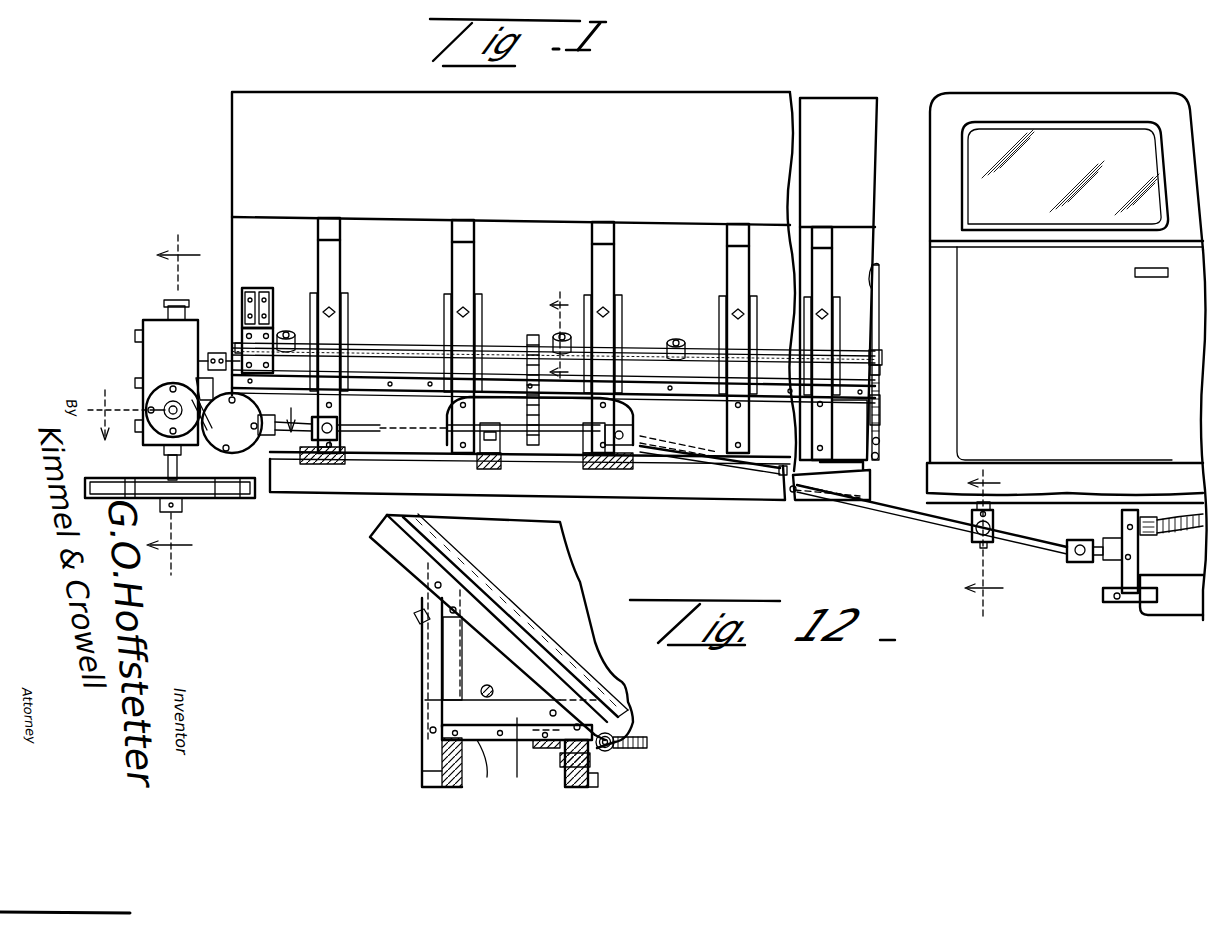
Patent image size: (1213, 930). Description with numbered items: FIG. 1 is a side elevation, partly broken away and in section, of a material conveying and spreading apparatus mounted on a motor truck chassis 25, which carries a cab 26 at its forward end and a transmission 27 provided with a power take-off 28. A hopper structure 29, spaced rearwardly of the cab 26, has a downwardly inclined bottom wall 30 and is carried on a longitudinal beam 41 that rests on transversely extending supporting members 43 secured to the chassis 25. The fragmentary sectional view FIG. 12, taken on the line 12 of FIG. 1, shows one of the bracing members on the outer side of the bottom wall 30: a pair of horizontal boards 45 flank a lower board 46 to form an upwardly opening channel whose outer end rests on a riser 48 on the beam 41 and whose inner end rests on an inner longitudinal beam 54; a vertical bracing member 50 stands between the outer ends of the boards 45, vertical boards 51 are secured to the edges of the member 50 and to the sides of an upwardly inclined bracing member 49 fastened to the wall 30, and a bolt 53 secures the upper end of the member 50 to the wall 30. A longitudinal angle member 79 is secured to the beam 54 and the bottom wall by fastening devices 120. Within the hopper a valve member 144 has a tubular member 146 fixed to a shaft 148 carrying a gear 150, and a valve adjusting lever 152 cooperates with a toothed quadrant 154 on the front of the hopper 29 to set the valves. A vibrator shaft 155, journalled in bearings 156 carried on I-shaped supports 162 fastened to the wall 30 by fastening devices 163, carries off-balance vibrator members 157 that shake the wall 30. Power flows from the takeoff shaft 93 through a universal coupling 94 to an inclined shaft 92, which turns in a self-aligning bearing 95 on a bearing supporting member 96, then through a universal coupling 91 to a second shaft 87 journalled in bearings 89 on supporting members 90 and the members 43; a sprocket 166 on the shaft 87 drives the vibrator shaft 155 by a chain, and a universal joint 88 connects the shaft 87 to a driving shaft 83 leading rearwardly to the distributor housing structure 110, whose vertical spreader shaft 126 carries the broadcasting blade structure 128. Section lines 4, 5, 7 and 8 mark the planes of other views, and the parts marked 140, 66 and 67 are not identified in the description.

In FIG. 1, the hopper structure 29 is at (243, 172).
In FIG. 1, the section line 12— 12 is at (838, 215).
In FIG. 1, the vertical boards 51 is at (594, 294).
In FIG. 12, the vertical boards 51 is at (448, 654).
In FIG. 1, the vibrator shaft 155 is at (384, 348).
In FIG. 12, the vibrator shaft 155 is at (492, 688).
In FIG. 1, the longitudinal beam 41 is at (553, 405).
In FIG. 12, the longitudinal beam 41 is at (424, 771).
In FIG. 1, the horizontal boards 45 is at (712, 377).
In FIG. 12, the horizontal boards 45 is at (552, 756).
In FIG. 1, the motor truck chassis 25 is at (743, 490).
In FIG. 1, the transversely extending supporting members 43 is at (325, 465).
In FIG. 1, the distributor housing structure 110 is at (162, 352).
In FIG. 1, the bearing block 140 is at (216, 351).
In FIG. 1, the fastening devices 163 is at (253, 288).
In FIG. 1, the I-shaped supports 162 is at (272, 322).
In FIG. 1, the bearings 156 is at (274, 358).
In FIG. 1, the vibrator members 157 is at (286, 331).
In FIG. 1, the section line 5 is at (173, 401).
In FIG. 1, the section line 4 is at (191, 405).
In FIG. 1, the section line 7 is at (565, 336).
In FIG. 1, the section line 8 is at (994, 545).
In FIG. 1, the driving shaft 83 is at (282, 432).
In FIG. 1, the universal joint 88 is at (324, 417).
In FIG. 1, the second shaft 87 is at (362, 436).
In FIG. 1, the spreader shaft 126 is at (165, 462).
In FIG. 1, the broadcasting blade structure 128 is at (230, 502).
In FIG. 1, the supporting members 90 is at (498, 470).
In FIG. 1, the bearings 89 is at (490, 428).
In FIG. 1, the sprocket 166 is at (540, 426).
In FIG. 1, the universal coupling 91 is at (632, 428).
In FIG. 1, the vertical bracing member 50 is at (730, 344).
In FIG. 12, the vertical bracing member 50 is at (440, 663).
In FIG. 1, the risers 48 is at (750, 393).
In FIG. 12, the risers 48 is at (445, 742).
In FIG. 1, the cab 26 is at (933, 370).
In FIG. 1, the transmission 27 is at (1180, 608).
In FIG. 1, the power take-off 28 is at (1113, 557).
In FIG. 1, the takeoff shaft 93 is at (1100, 543).
In FIG. 1, the universal coupling 94 is at (1074, 558).
In FIG. 1, the self-aligning bearing 95 is at (975, 540).
In FIG. 1, the bearing supporting member 96 is at (993, 513).
In FIG. 1, the inclined shaft 92 is at (873, 512).
In FIG. 1, the valve adjusting lever 152 is at (882, 332).
In FIG. 1, the toothed quadrant 154 is at (882, 356).
In FIG. 1, the gear 150 is at (880, 442).
In FIG. 1, the link 67 is at (880, 450).
In FIG. 1, the pin 66 is at (876, 453).
In FIG. 12, the bottom wall 30 is at (490, 620).
In FIG. 12, the inclined bracing member 49 is at (407, 567).
In FIG. 12, the bolt 53 is at (413, 620).
In FIG. 12, the lower board 46 is at (486, 767).
In FIG. 12, the longitudinal angle member 79 is at (560, 754).
In FIG. 12, the inner longitudinal beam 54 is at (598, 782).
In FIG. 12, the fastening devices 120 is at (613, 740).
In FIG. 12, the shaft 148 is at (640, 736).
In FIG. 12, the valve member 144 is at (628, 744).
In FIG. 12, the tubular member 146 is at (640, 752).